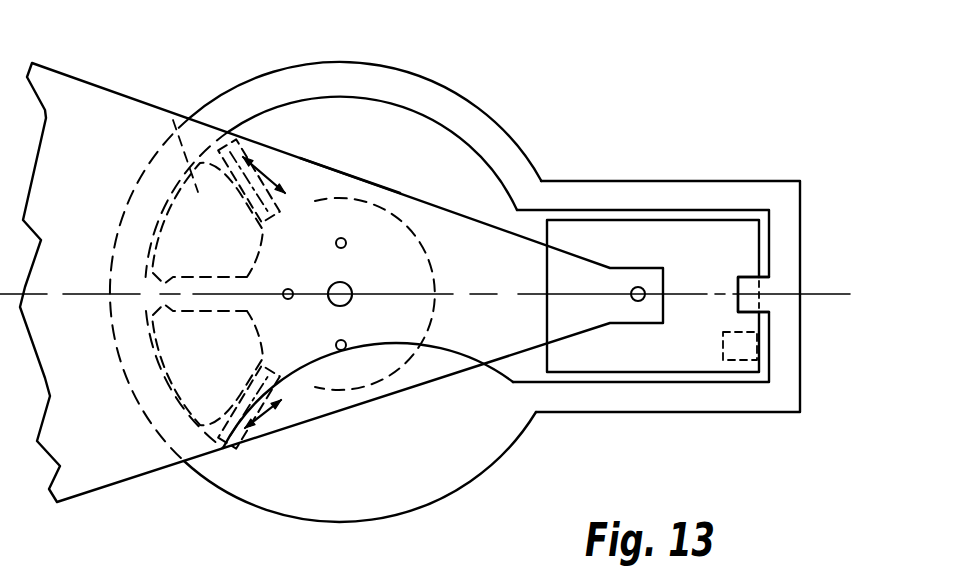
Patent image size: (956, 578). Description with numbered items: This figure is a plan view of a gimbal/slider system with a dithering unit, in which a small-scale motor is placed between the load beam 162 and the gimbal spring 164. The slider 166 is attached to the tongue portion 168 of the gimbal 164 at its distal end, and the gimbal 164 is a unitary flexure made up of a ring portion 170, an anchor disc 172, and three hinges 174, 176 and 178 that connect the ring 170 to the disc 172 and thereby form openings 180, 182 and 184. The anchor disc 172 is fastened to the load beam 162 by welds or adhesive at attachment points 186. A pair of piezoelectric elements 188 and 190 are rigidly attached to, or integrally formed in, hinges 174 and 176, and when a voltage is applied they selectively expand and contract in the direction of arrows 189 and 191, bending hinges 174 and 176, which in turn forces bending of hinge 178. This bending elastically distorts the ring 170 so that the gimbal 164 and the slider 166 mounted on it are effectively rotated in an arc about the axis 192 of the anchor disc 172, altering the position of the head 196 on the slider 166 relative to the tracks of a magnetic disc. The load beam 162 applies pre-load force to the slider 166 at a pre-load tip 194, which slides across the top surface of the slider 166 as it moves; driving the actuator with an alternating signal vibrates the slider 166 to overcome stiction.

The load beam 162 is at (52, 66).
The gimbal spring 164 is at (623, 181).
The slider 166 is at (613, 373).
The tongue portion 168 is at (737, 312).
The ring portion 170 is at (473, 113).
The anchor disc 172 is at (430, 244).
The hinge 174 is at (238, 138).
The hinge 176 is at (238, 447).
The hinge 178 is at (183, 263).
The opening 180 is at (422, 133).
The opening 182 is at (152, 165).
The opening 184 is at (150, 409).
The attachment points 186 is at (287, 287).
The piezoelectric element 188 is at (346, 167).
The arrow 189 is at (283, 158).
The piezoelectric element 190 is at (237, 373).
The arrow 191 is at (262, 396).
The axis 192 is at (330, 303).
The pre-load tip 194 is at (638, 287).
The head 196 is at (740, 362).